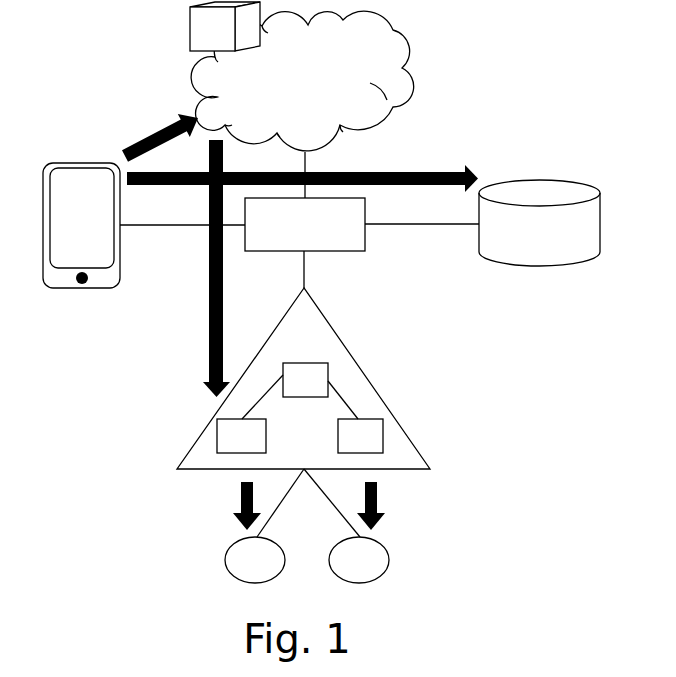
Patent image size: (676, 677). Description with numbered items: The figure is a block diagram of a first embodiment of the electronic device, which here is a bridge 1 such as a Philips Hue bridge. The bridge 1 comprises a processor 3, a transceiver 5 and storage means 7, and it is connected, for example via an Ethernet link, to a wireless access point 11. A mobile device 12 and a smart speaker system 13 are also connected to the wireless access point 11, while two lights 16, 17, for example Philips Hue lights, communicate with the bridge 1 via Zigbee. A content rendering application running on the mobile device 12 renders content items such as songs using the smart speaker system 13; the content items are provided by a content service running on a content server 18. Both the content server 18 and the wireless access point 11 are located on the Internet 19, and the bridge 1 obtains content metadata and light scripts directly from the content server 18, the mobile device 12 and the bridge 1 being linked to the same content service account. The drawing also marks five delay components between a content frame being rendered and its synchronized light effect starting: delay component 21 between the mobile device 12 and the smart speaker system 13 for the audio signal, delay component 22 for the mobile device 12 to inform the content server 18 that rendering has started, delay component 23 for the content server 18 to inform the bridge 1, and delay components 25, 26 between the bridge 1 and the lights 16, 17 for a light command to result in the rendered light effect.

The bridge 1 is at (420, 447).
The processor 3 is at (300, 391).
The transceiver 5 is at (360, 436).
The storage means 7 is at (241, 436).
The wireless access point 11 is at (299, 243).
The mobile device 12 is at (81, 225).
The smart speaker system 13 is at (539, 223).
The light 16 is at (264, 526).
The light 17 is at (346, 526).
The content server 18 is at (225, 26).
The Internet 19 is at (302, 104).
The delay component 21 is at (428, 168).
The delay component 22 is at (148, 128).
The delay component 23 is at (212, 323).
The delay component 25 is at (240, 510).
The delay component 26 is at (378, 497).